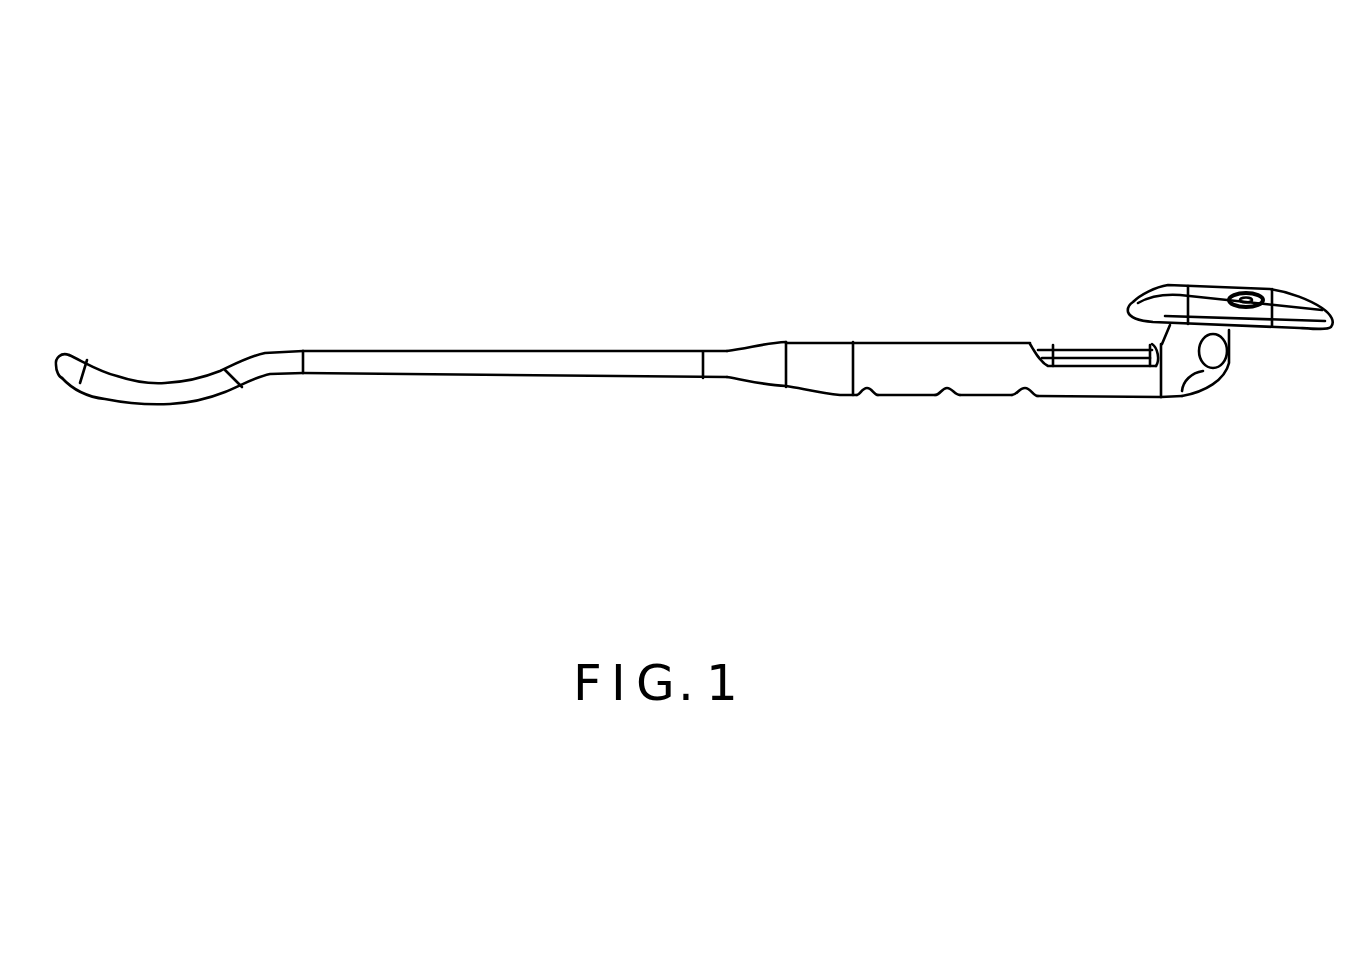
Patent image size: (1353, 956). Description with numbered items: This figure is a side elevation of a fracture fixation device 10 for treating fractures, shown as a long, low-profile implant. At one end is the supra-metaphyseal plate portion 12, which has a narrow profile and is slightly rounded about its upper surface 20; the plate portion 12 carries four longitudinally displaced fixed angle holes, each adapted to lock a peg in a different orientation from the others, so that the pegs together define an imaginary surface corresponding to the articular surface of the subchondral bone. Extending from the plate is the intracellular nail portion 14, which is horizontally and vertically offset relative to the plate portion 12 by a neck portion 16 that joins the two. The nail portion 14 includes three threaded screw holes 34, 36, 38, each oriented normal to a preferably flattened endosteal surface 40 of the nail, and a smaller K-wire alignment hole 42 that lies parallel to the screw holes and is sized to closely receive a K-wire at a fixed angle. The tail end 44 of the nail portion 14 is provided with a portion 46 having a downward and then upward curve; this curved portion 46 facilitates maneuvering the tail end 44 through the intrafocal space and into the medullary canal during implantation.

The fracture fixation device 10 is at (926, 138).
The supra-metaphyseal plate portion 12 is at (1264, 329).
The intracellular nail portion 14 is at (908, 387).
The neck portion 16 is at (1169, 398).
The upper surface 20 is at (1202, 287).
The threaded screw hole 34 is at (1023, 397).
The threaded screw hole 36 is at (947, 397).
The threaded screw hole 38 is at (867, 392).
The endosteal surface 40 is at (942, 342).
The K-wire alignment hole 42 is at (818, 393).
The tail end 44 is at (343, 352).
The curved portion 46 is at (157, 382).